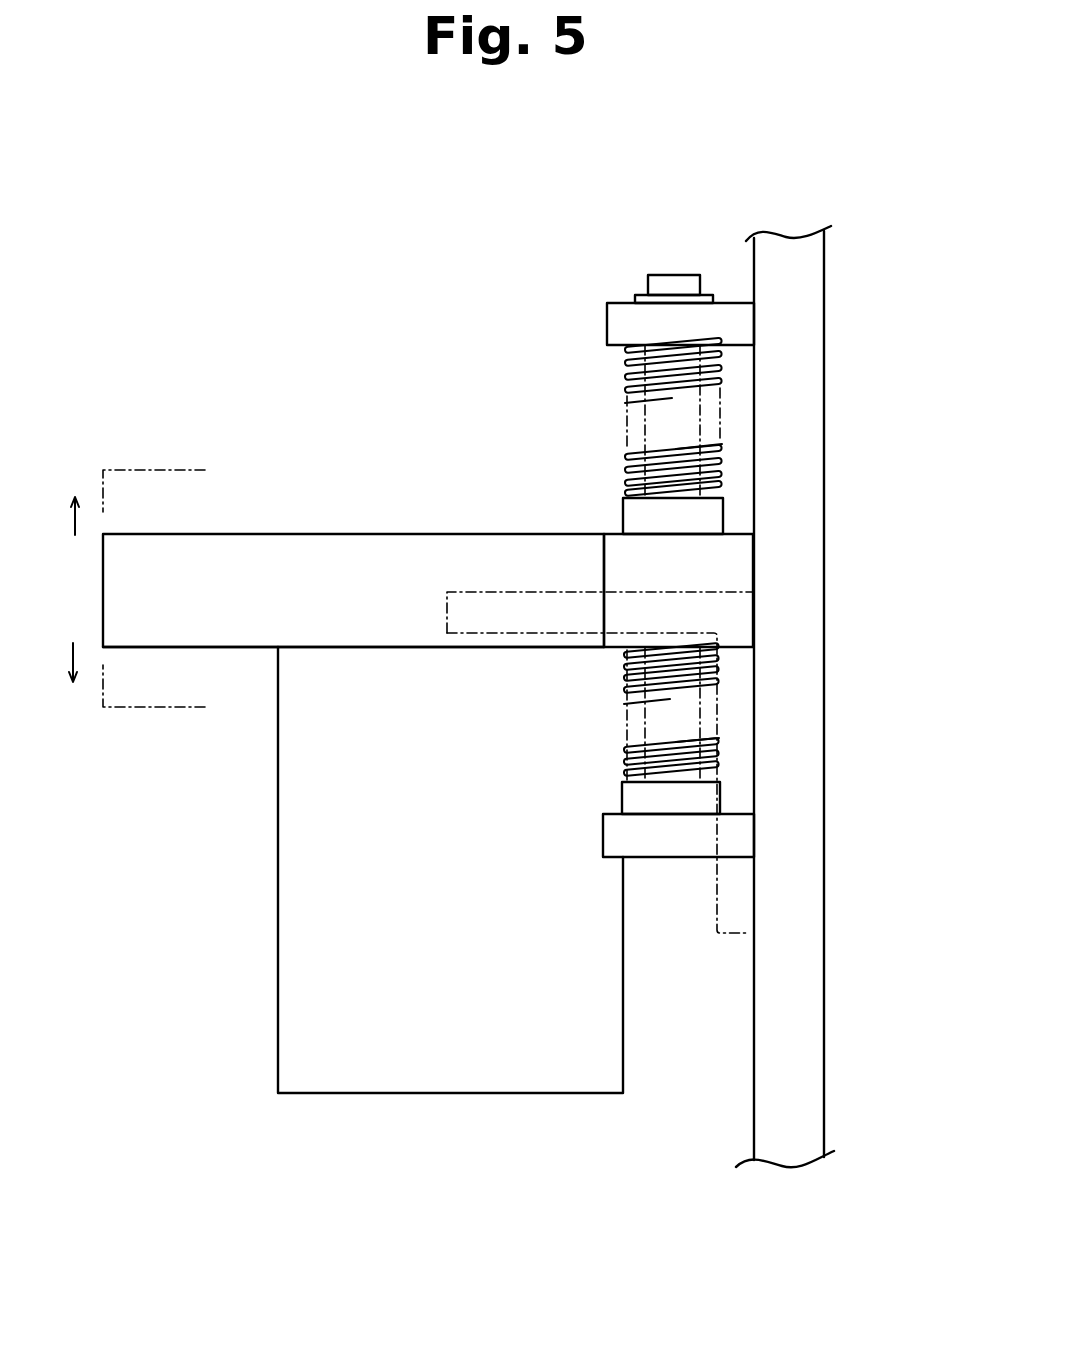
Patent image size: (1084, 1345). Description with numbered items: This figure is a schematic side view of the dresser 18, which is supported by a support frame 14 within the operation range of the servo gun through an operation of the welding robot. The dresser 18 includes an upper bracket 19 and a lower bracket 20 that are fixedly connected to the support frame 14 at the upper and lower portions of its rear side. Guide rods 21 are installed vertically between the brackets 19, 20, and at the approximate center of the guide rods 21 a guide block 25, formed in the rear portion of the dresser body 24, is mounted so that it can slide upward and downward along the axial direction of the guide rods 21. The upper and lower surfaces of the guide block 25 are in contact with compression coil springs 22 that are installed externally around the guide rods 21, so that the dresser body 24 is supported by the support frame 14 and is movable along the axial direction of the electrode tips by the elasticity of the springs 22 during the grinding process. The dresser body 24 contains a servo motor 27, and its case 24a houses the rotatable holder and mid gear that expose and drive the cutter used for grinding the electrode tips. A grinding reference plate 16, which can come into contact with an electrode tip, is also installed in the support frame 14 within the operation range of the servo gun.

The support frame 14 is at (766, 270).
The grinding reference plate 16 is at (500, 608).
The dresser 18 is at (508, 1148).
The bracket 19 is at (624, 327).
The bracket 20 is at (622, 828).
The guide rod 21 is at (658, 422).
The compression coil spring 22 is at (723, 370).
The dresser body 24 is at (303, 478).
The case 24a is at (250, 625).
The guide block 25 is at (723, 557).
The servo motor 27 is at (293, 977).